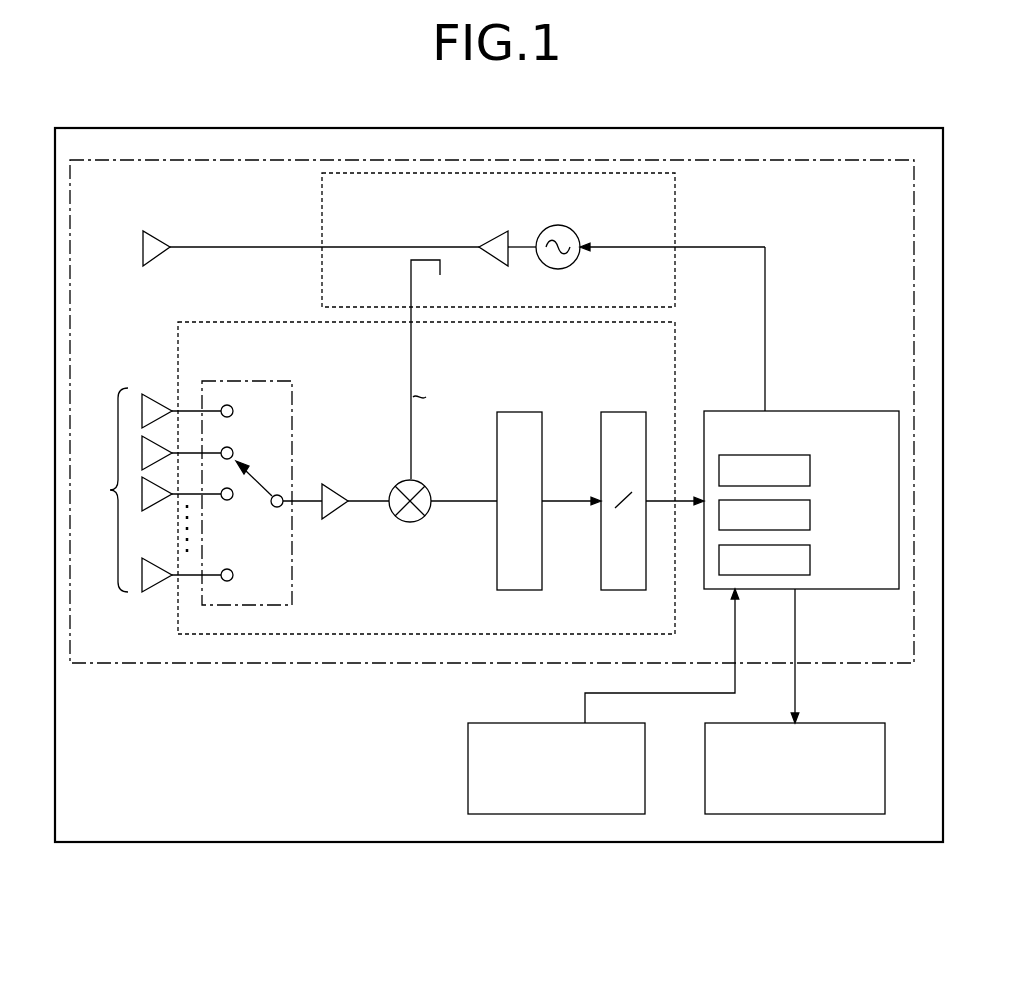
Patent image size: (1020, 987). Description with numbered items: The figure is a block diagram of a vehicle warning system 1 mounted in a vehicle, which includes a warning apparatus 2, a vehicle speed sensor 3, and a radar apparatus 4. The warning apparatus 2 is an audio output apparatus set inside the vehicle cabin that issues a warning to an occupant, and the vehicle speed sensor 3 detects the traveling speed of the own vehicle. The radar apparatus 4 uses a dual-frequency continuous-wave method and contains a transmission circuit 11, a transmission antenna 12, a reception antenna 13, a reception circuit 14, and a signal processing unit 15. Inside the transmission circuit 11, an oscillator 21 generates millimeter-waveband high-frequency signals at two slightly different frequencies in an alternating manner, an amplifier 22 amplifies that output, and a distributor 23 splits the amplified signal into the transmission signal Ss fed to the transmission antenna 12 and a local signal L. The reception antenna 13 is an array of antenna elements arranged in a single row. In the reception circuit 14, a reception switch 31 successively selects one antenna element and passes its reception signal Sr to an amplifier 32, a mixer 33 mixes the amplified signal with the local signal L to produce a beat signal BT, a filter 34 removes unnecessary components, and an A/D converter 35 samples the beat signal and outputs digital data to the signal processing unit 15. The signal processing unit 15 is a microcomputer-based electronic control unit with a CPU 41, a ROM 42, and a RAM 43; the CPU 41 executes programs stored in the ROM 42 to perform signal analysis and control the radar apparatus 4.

The vehicle warning system 1 is at (765, 128).
The warning apparatus 2 is at (885, 735).
The vehicle speed sensor 3 is at (512, 723).
The radar apparatus 4 is at (825, 160).
The transmission circuit 11 is at (675, 215).
The transmission antenna 12 is at (151, 233).
The reception antenna 13 is at (154, 490).
The reception circuit 14 is at (675, 360).
The signal processing unit 15 is at (795, 411).
The oscillator 21 is at (574, 236).
The amplifier 22 is at (492, 238).
The distributor 23 is at (409, 258).
The reception switch 31 is at (230, 381).
The amplifier 32 is at (337, 520).
The mixer 33 is at (410, 522).
The filter 34 is at (515, 412).
The A/D converter 35 is at (618, 412).
The CPU 41 is at (810, 469).
The ROM 42 is at (810, 514).
The RAM 43 is at (810, 559).